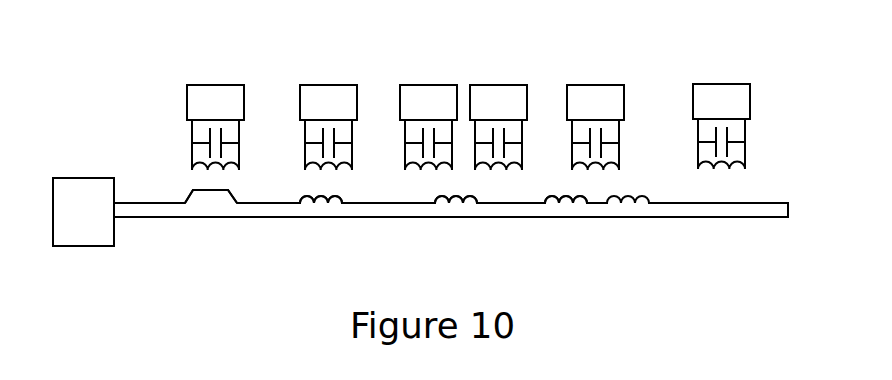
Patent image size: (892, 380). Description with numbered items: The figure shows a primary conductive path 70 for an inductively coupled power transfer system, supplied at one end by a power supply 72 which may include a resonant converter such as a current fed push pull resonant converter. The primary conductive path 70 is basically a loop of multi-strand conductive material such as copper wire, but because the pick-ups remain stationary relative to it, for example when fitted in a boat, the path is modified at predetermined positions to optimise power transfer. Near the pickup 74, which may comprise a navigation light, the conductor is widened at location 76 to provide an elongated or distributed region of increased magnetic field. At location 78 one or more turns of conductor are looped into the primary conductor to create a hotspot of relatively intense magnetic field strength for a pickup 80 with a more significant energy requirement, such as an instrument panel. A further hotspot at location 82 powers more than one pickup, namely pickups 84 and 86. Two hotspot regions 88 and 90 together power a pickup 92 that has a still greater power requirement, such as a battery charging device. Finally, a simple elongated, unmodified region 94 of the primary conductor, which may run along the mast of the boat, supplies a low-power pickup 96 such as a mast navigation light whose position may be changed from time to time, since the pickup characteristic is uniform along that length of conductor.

The primary conductive path 70 is at (292, 253).
The power supply 72 is at (97, 240).
The pickup 74 is at (222, 105).
The widened location 76 is at (192, 192).
The looped location 78 is at (303, 197).
The pickup 80 is at (327, 92).
The hotspot location 82 is at (437, 198).
The pickup 84 is at (427, 97).
The pickup 86 is at (502, 95).
The hotspot region 88 is at (553, 198).
The hotspot region 90 is at (647, 198).
The pickup 92 is at (602, 97).
The unmodified region of primary conductive path 94 is at (777, 172).
The pickup 96 is at (728, 93).